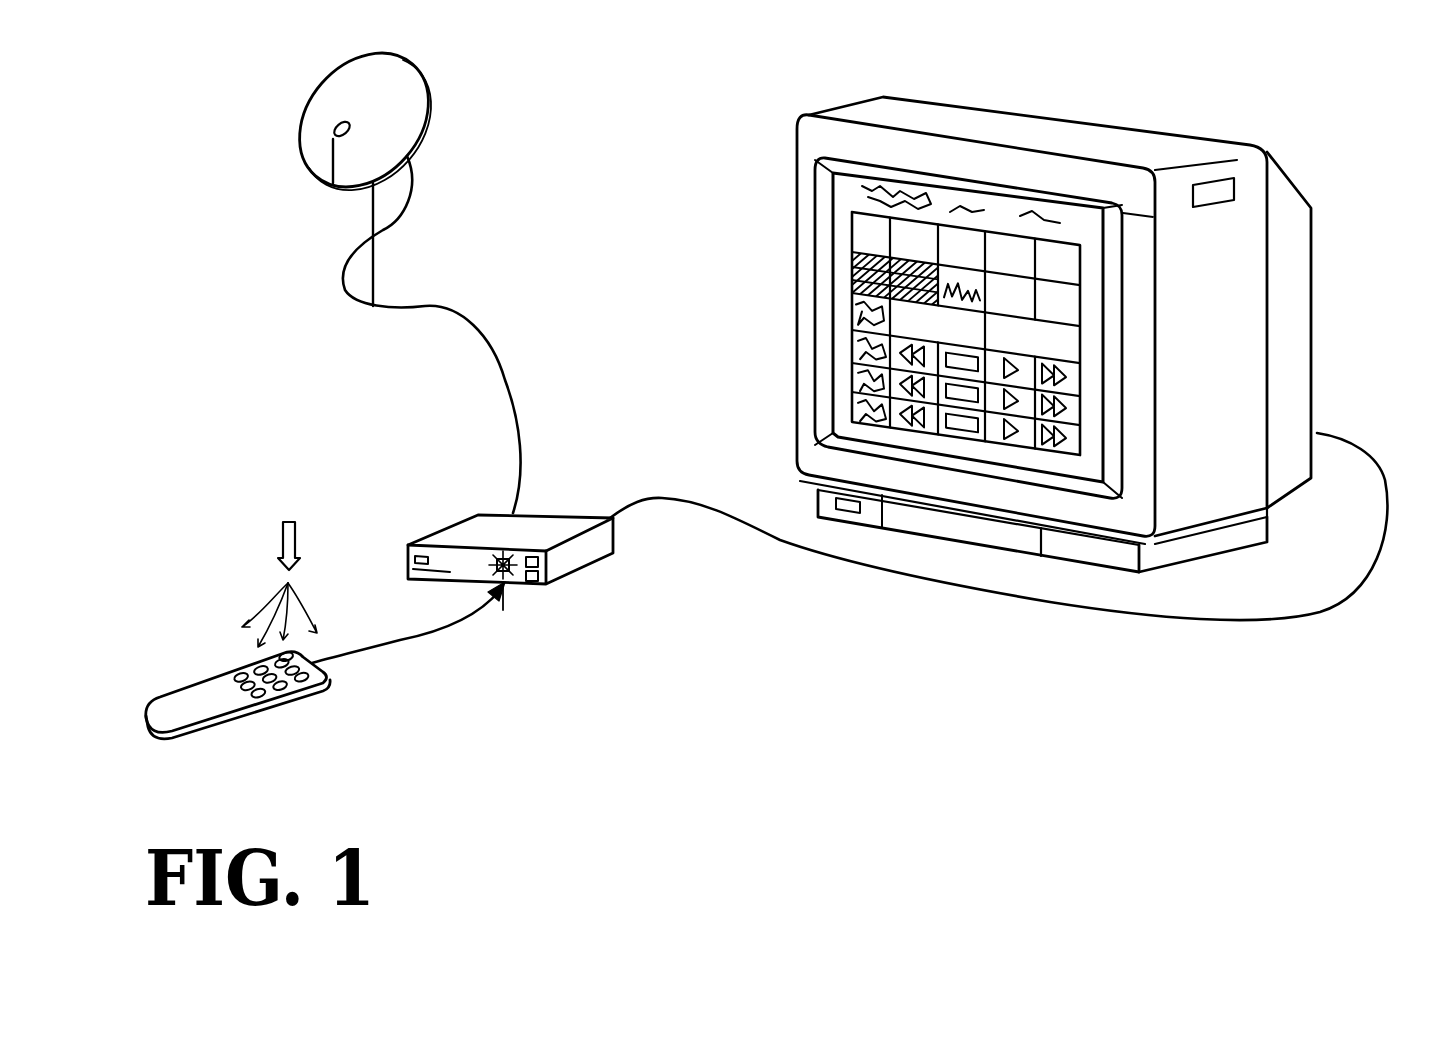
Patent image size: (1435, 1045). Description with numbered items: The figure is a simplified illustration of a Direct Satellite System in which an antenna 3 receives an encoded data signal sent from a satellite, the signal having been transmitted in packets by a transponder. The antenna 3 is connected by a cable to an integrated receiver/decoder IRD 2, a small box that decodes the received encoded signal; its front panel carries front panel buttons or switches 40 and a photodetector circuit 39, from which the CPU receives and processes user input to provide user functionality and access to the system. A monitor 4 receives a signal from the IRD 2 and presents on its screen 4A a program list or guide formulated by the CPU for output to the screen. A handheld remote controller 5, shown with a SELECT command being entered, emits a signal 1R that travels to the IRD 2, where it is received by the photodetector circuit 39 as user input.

The infrared signal 1R is at (408, 622).
The integrated receiver/decoder 2 is at (533, 530).
The antenna 3 is at (392, 72).
The monitor 4 is at (1098, 138).
The display screen 4A is at (840, 232).
The remote controller 5 is at (175, 737).
The photodetector circuit 39 is at (533, 582).
The front panel buttons or switches 40 is at (487, 566).